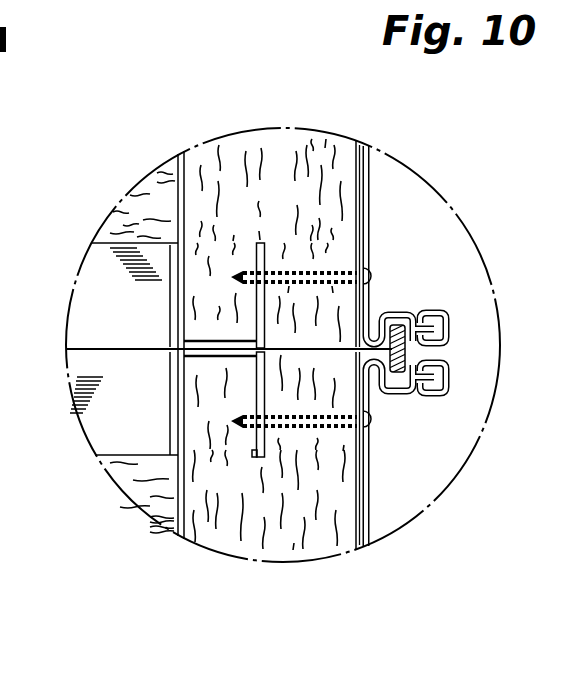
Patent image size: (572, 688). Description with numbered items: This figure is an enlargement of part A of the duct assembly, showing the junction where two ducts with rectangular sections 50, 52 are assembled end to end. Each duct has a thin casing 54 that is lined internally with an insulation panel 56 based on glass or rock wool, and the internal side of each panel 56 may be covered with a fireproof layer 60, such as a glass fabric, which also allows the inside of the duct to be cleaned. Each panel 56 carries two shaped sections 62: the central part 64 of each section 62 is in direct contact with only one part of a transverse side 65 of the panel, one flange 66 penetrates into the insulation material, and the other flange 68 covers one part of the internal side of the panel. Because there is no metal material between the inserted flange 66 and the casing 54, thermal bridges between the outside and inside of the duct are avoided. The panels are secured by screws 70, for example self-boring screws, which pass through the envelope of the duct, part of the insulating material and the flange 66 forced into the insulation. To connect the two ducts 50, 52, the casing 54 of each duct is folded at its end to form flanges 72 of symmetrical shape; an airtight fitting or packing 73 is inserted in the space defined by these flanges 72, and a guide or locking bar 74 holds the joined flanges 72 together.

The duct with rectangular section 50 is at (370, 196).
The duct with rectangular section 52 is at (370, 497).
The casing 54 is at (370, 167).
The insulation panel 56 is at (325, 150).
The fireproof layer 60 is at (177, 207).
The shaped section 62 is at (277, 240).
The central part 64 is at (212, 341).
The transverse side 65 is at (78, 350).
The flange 66 is at (246, 240).
The flange 68 is at (176, 279).
The screw 70 is at (330, 264).
The flange 72 is at (448, 325).
The airtight fitting or packing 73 is at (392, 323).
The guide or locking bar 74 is at (448, 348).
The part A is at (157, 173).